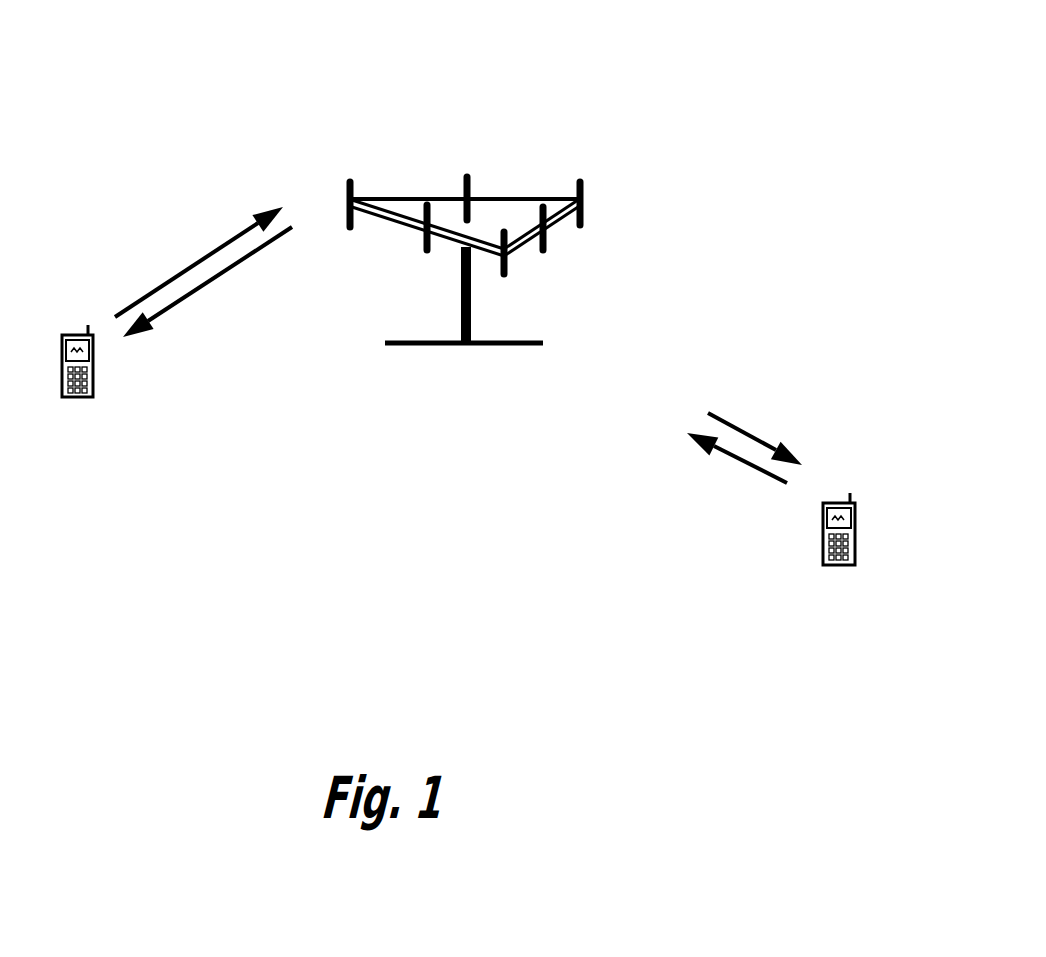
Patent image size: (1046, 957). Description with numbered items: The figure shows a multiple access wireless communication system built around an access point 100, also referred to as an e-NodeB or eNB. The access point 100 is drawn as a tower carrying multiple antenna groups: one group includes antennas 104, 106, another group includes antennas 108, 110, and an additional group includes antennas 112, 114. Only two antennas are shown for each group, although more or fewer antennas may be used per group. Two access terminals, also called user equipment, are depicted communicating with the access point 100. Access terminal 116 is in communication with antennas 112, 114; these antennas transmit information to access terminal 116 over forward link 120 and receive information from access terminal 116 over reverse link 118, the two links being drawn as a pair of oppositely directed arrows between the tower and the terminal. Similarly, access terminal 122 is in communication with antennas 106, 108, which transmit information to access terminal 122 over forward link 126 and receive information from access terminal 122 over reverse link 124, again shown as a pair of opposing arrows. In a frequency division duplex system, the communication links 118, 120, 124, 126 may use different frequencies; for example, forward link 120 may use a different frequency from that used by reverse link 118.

The access point 100 is at (437, 343).
The antenna 104 is at (504, 274).
The antenna 106 is at (543, 250).
The antenna 108 is at (580, 222).
The antenna 110 is at (468, 180).
The antenna 112 is at (352, 198).
The antenna 114 is at (427, 250).
The access terminal 116 is at (80, 334).
The reverse link 118 is at (198, 262).
The forward link 120 is at (217, 278).
The access terminal 122 is at (837, 500).
The reverse link 124 is at (725, 450).
The forward link 126 is at (758, 442).